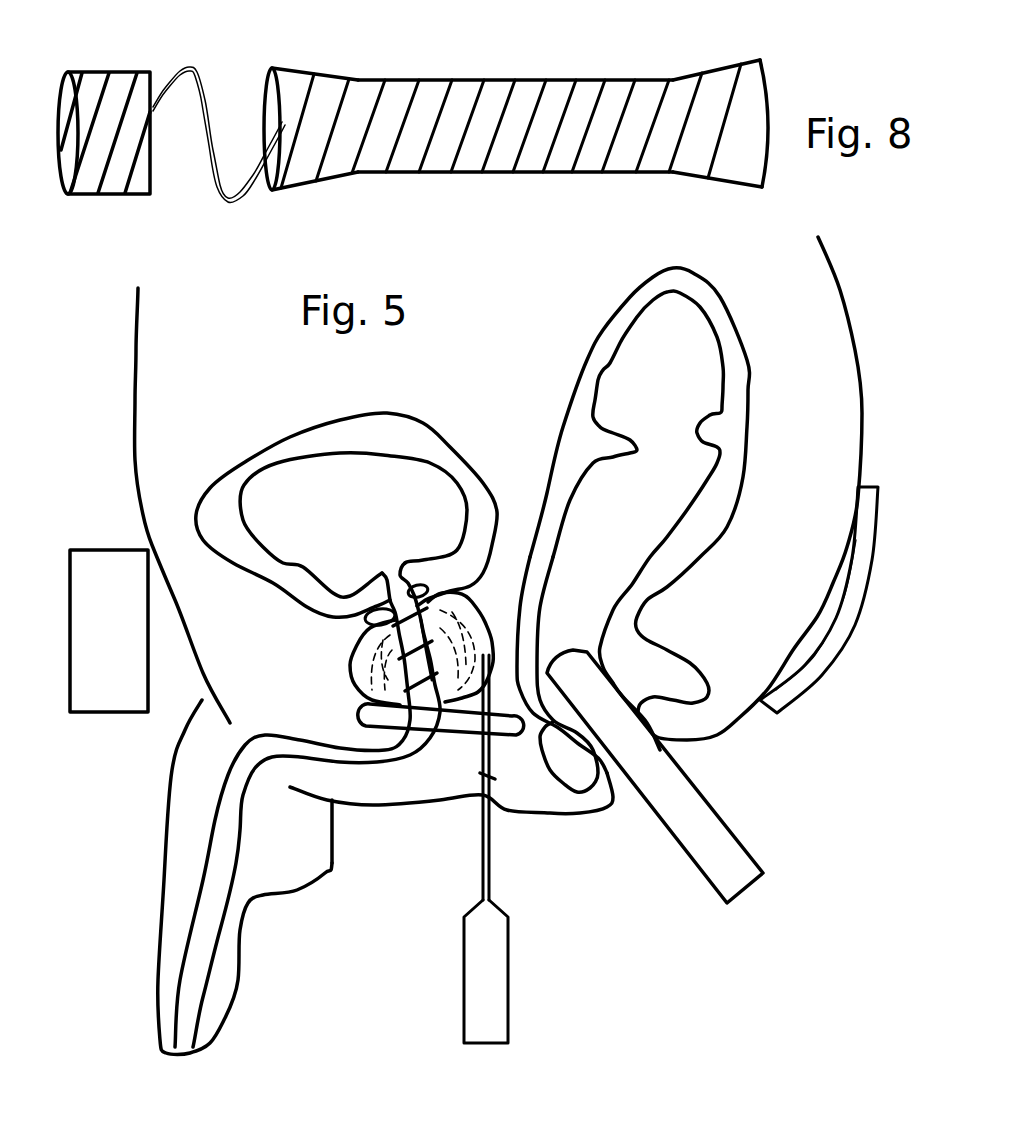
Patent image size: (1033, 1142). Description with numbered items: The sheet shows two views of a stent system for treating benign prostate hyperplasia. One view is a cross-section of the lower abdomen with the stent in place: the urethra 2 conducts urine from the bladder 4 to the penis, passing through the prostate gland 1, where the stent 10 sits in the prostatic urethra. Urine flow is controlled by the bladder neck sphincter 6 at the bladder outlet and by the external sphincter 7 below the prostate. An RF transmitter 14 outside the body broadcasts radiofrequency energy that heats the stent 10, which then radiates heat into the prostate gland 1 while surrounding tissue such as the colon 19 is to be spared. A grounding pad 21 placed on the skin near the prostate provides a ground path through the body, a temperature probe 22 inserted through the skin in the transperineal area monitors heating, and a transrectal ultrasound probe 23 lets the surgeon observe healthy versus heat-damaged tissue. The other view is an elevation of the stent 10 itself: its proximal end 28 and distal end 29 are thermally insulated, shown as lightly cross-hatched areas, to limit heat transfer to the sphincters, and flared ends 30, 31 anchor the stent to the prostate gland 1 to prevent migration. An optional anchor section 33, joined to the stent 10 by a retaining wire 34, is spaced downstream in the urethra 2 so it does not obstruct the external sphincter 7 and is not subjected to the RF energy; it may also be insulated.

In FIG. 5, the prostate gland 1 is at (350, 664).
In FIG. 5, the urethra 2 is at (213, 948).
In FIG. 5, the bladder 4 is at (261, 576).
In FIG. 5, the bladder neck sphincter 6 is at (368, 620).
In FIG. 5, the external sphincter 7 is at (355, 720).
In FIG. 5, the RF transmitter 14 is at (103, 715).
In FIG. 5, the colon 19 is at (533, 612).
In FIG. 5, the grounding pad 21 is at (820, 655).
In FIG. 5, the temperature probe 22 is at (492, 866).
In FIG. 5, the transrectal ultrasound probe 23 is at (695, 775).
In FIG. 8, the stent 10 is at (402, 78).
In FIG. 8, the proximal end 28 is at (288, 68).
In FIG. 8, the distal end 29 is at (713, 95).
In FIG. 8, the flared end 30 is at (263, 95).
In FIG. 8, the flared end 31 is at (782, 118).
In FIG. 8, the anchor section 33 is at (95, 70).
In FIG. 8, the retaining wire 34 is at (183, 65).